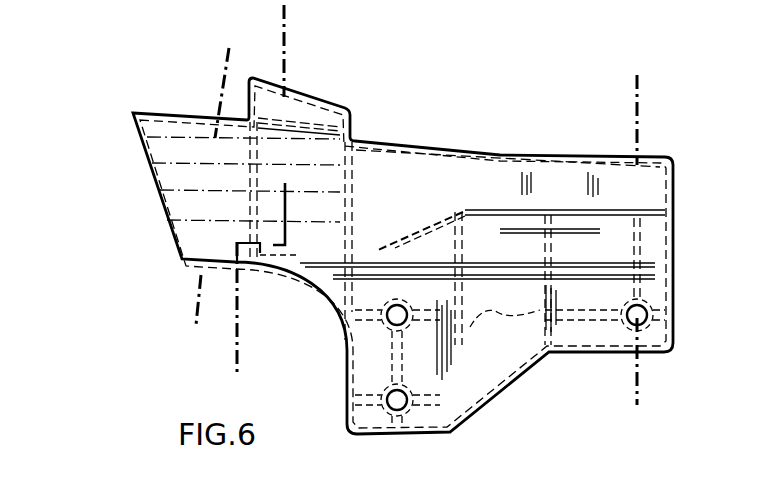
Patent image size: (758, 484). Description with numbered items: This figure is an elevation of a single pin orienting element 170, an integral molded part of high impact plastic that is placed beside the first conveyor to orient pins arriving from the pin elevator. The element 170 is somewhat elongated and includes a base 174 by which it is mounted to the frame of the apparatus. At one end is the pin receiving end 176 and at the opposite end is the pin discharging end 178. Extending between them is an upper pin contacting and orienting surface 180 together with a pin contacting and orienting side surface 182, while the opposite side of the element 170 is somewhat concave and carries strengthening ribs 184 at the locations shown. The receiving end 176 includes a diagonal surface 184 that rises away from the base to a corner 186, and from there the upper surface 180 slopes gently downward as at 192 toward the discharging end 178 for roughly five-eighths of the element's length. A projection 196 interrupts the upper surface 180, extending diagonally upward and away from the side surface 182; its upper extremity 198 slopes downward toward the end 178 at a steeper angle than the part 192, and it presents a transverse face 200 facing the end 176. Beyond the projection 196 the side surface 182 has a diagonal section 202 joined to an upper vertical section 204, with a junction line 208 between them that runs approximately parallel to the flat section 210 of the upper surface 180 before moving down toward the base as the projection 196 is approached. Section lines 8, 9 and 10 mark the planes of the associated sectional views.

The section line 8- 8 is at (240, 58).
The section line 9- 9 is at (296, 17).
The section line 10- 10 is at (650, 88).
The pin orienting element 170 is at (445, 146).
The base 174 is at (493, 365).
The pin receiving end 176 is at (135, 176).
The pin discharging end 178 is at (688, 230).
The upper pin contacting and orienting surface 180 is at (500, 156).
The pin contacting and orienting side surface 182 is at (620, 230).
The strengthening ribs 184 is at (157, 208).
The corner 186 is at (133, 112).
The sloping part of upper surface 192 is at (162, 116).
The projection 196 is at (333, 88).
The upper extremity of projection 198 is at (287, 93).
The transverse face 200 is at (247, 94).
The diagonal section of side surface 202 is at (512, 255).
The upper vertical section of side surface 204 is at (578, 197).
The junction line 208 is at (422, 232).
The flat section of upper surface 210 is at (587, 156).